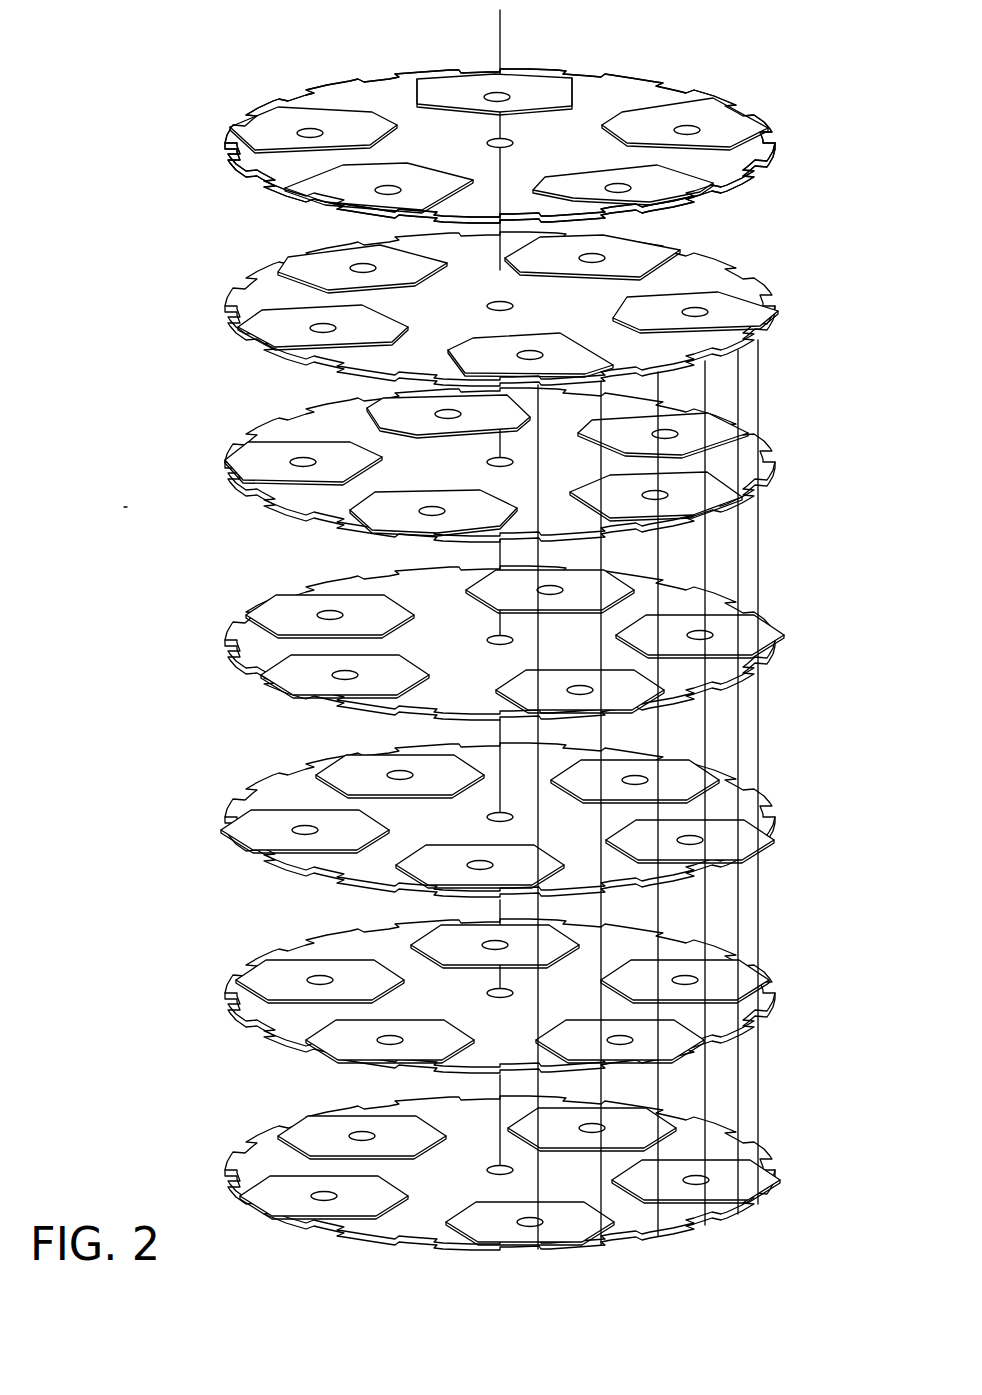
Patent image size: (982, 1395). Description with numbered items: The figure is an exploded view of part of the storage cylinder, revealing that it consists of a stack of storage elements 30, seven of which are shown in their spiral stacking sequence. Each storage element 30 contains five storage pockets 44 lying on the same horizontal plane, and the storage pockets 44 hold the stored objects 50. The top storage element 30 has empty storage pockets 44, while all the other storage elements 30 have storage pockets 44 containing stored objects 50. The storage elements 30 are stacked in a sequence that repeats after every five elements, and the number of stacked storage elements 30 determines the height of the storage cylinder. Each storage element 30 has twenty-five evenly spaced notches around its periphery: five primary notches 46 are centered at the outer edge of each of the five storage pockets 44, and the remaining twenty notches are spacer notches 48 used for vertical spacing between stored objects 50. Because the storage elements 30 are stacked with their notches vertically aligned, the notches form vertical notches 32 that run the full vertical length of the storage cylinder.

The storage element 30 is at (449, 156).
The vertical notch 32 is at (677, 90).
The storage pocket 44 is at (289, 152).
The primary notch 46 is at (237, 127).
The spacer notch 48 is at (290, 54).
The stored object 50 is at (341, 283).